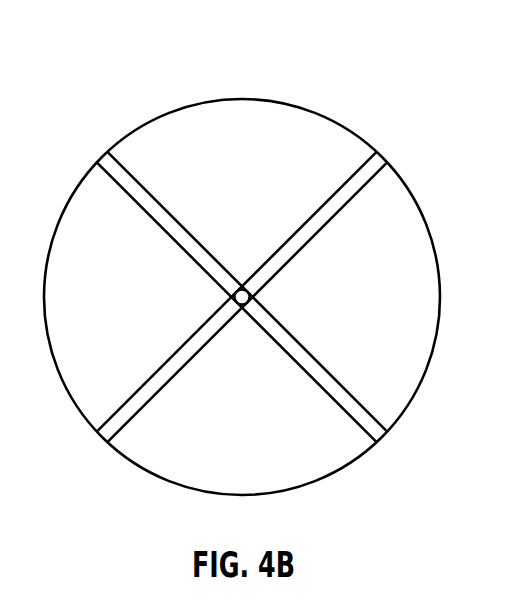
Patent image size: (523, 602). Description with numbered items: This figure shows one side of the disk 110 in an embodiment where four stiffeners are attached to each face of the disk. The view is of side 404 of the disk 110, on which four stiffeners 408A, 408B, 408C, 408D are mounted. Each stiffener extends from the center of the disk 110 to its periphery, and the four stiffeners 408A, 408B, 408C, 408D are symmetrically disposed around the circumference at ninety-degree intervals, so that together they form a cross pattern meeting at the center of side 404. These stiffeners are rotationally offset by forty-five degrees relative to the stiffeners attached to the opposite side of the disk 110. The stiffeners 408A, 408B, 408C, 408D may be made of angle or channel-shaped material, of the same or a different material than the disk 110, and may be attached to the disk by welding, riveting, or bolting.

The disk 110 is at (160, 54).
The side 404 is at (137, 130).
The stiffener 408A is at (323, 389).
The stiffener 408B is at (177, 352).
The stiffener 408C is at (154, 190).
The stiffener 408D is at (315, 235).